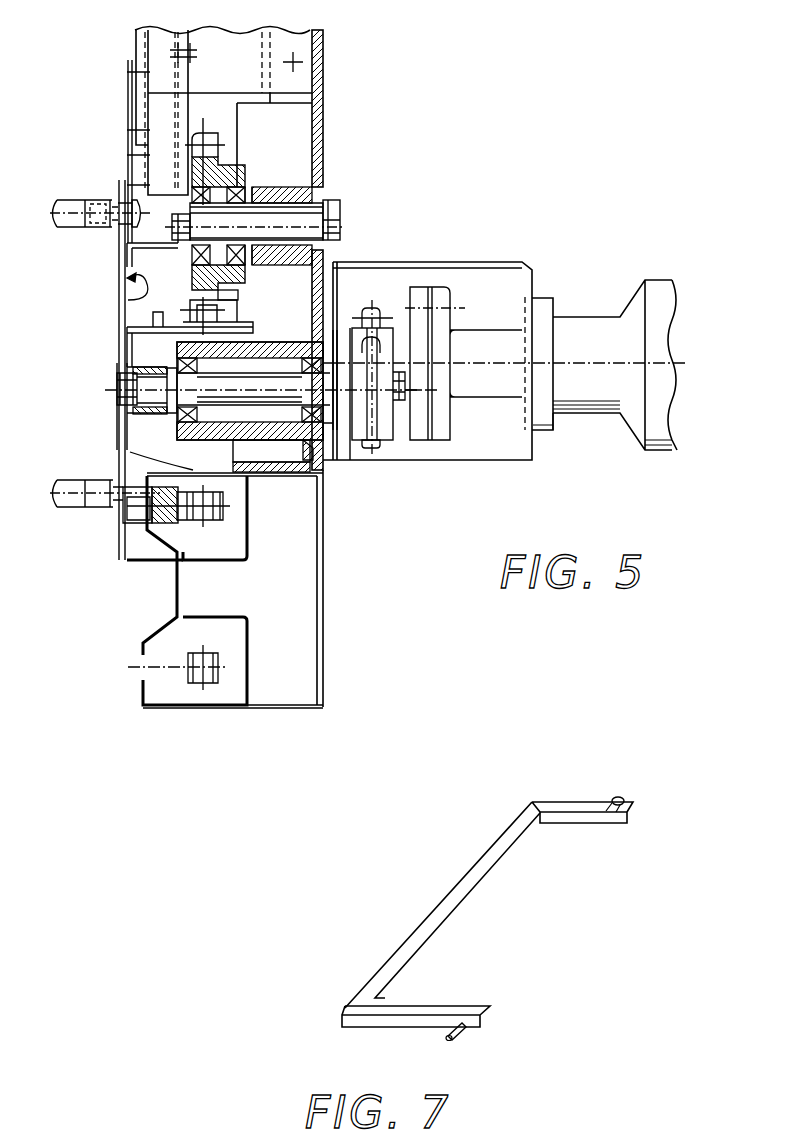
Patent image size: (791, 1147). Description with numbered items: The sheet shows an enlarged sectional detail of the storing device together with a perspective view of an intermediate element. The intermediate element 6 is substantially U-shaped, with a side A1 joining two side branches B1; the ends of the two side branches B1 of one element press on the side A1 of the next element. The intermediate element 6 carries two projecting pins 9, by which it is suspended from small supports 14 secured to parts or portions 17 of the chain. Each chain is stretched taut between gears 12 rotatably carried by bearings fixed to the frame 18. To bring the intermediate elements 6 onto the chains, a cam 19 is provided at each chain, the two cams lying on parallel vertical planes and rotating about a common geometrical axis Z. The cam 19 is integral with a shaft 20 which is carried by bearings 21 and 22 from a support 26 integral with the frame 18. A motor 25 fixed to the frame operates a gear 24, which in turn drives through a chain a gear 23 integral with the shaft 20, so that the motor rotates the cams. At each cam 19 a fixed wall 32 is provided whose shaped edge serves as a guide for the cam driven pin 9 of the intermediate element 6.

In FIG. 5, the small support 14 is at (131, 143).
In FIG. 5, the projecting pin 9 is at (129, 193).
In FIG. 7, the projecting pin 9 is at (620, 797).
In FIG. 5, the intermediate element 6 is at (72, 196).
In FIG. 7, the intermediate element 6 is at (452, 894).
In FIG. 5, the gear 12 is at (212, 140).
In FIG. 5, the frame 18 is at (322, 137).
In FIG. 5, the cam 19 is at (120, 240).
In FIG. 5, the fixed wall 32 is at (128, 301).
In FIG. 5, the chain portion 17 is at (163, 317).
In FIG. 5, the geometrical axis Z is at (107, 388).
In FIG. 5, the bearing 22 is at (182, 415).
In FIG. 5, the shaft 20 is at (268, 380).
In FIG. 5, the gear 24 is at (373, 313).
In FIG. 5, the motor 25 is at (658, 290).
In FIG. 5, the bearing 21 is at (320, 412).
In FIG. 5, the gear 23 is at (373, 435).
In FIG. 5, the support 26 is at (276, 428).
In FIG. 7, the side A1 is at (408, 941).
In FIG. 7, the side branch B1 is at (562, 802).